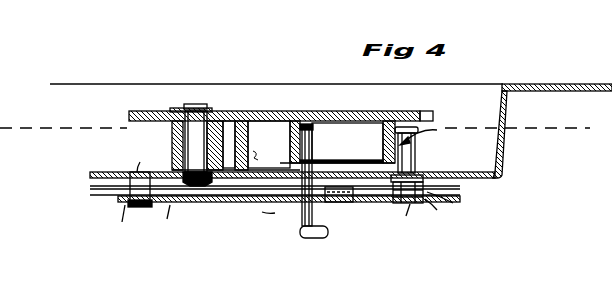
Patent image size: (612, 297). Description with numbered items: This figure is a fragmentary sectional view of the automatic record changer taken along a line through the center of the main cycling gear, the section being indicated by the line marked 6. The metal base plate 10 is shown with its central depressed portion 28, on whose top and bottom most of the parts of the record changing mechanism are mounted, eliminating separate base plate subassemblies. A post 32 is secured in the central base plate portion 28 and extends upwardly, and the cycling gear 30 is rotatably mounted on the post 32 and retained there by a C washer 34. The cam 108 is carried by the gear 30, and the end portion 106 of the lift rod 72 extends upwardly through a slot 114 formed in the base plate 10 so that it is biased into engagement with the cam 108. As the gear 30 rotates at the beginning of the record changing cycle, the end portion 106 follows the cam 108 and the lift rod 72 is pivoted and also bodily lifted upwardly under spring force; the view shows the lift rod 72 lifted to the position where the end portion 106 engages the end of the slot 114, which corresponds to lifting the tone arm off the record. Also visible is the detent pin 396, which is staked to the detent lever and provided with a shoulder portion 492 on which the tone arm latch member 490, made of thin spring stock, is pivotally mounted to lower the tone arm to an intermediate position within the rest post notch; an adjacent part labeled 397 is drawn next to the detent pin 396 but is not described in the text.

The base plate 10 is at (552, 78).
The central depressed portion 28 is at (477, 172).
The section line 6- 6 is at (27, 158).
The cycling gear 30 is at (360, 112).
The post 32 is at (200, 104).
The C washer 34 is at (222, 111).
The cam 108 is at (315, 111).
The end portion 106 is at (312, 143).
The lift rod 72 is at (308, 240).
The detent pin 396 is at (405, 113).
The washer 397 is at (383, 172).
The shoulder portion 492 is at (405, 175).
The tone arm latch member 490 is at (430, 184).
The slot 114 is at (285, 190).